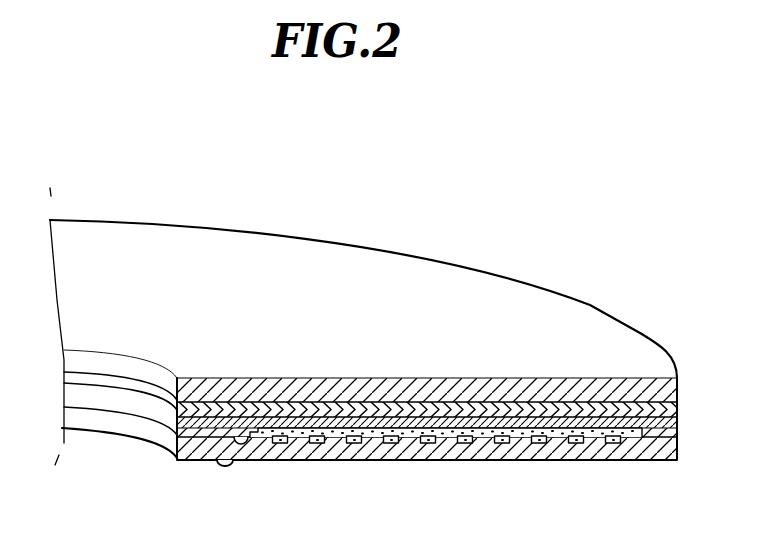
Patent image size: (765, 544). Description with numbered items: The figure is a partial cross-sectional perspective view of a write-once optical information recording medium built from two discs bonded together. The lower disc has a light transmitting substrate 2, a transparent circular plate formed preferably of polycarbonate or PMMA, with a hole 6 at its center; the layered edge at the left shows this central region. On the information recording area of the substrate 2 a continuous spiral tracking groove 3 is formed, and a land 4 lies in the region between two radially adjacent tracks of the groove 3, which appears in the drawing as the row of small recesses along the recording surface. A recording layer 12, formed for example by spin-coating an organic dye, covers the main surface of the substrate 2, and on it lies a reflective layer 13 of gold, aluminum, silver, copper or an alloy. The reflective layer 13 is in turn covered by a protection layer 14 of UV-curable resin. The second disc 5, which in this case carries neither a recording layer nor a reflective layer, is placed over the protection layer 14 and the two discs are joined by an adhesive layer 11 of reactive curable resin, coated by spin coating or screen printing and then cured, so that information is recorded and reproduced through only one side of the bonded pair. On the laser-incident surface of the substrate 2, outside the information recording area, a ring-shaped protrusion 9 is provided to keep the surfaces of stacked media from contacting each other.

The light transmitting substrate 2 is at (405, 455).
The tracking groove 3 is at (502, 445).
The land 4 is at (563, 446).
The disc 5 is at (580, 300).
The hole 6 is at (92, 420).
The protrusion 9 is at (225, 466).
The adhesive layer 11 is at (372, 410).
The recording layer 12 is at (294, 440).
The reflective layer 13 is at (608, 423).
The protection layer 14 is at (517, 417).